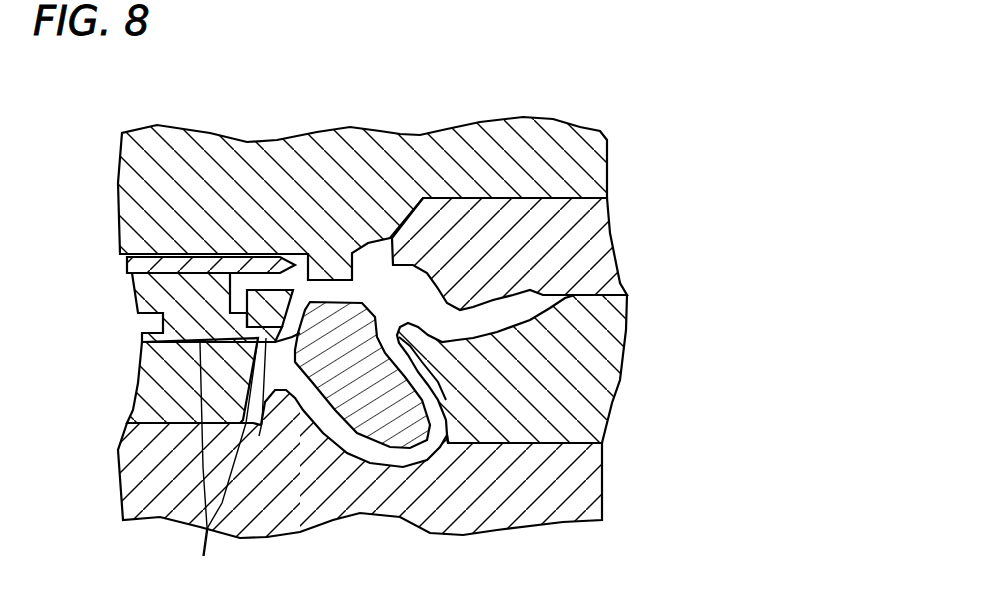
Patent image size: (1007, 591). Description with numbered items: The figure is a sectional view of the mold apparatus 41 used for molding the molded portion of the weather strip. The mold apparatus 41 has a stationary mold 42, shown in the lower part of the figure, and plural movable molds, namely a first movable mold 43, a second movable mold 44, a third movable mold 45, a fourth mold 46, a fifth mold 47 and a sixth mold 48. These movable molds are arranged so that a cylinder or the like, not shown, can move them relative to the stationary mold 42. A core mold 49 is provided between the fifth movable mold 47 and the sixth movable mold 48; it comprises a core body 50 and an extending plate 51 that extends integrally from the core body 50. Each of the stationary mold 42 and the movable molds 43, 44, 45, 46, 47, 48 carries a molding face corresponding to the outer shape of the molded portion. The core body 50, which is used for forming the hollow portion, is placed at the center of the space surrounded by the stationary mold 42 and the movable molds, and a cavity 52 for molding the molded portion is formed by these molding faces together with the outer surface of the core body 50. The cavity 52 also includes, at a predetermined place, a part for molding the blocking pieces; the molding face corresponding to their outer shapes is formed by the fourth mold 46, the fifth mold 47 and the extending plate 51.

The mold apparatus 41 is at (607, 96).
The stationary mold 42 is at (361, 516).
The first movable mold 43 is at (622, 383).
The second movable mold 44 is at (618, 233).
The third movable mold 45 is at (349, 127).
The fourth mold 46 is at (127, 265).
The fifth mold 47 is at (133, 300).
The sixth mold 48 is at (133, 380).
The core mold 49 is at (143, 334).
The core body 50 is at (352, 299).
The extending plate 51 is at (225, 463).
The cavity 52 is at (515, 304).